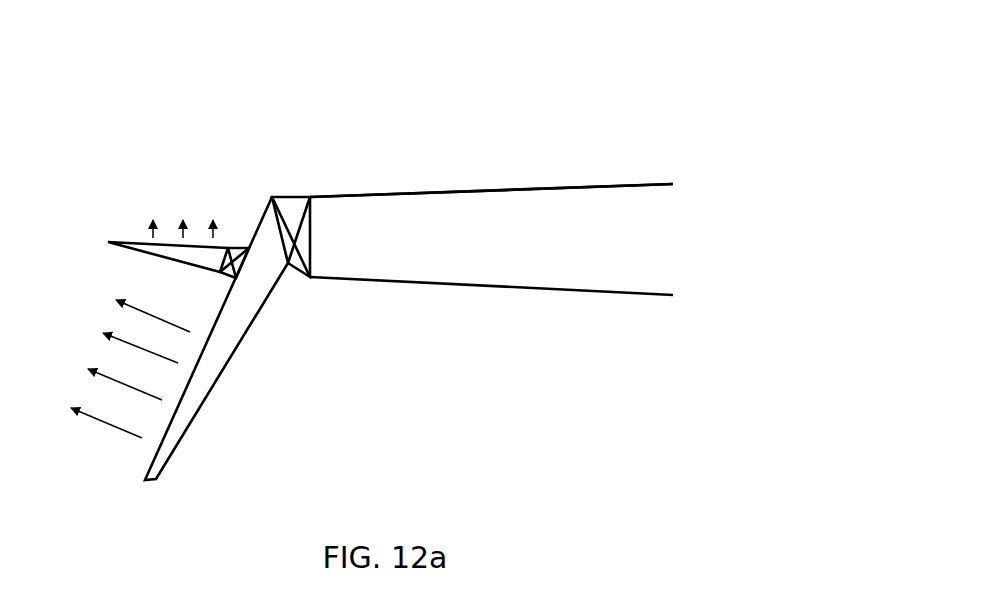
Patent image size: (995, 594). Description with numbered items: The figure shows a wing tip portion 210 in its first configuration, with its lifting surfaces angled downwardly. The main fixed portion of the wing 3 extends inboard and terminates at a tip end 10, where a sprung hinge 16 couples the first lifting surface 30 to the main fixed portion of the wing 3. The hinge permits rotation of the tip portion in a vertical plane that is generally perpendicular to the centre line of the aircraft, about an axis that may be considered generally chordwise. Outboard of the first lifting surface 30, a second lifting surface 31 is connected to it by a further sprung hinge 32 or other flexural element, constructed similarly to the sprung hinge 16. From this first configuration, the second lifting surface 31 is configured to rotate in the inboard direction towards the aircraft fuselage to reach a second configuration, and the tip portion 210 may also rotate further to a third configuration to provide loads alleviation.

The wing 3 is at (510, 213).
The tip end 10 is at (350, 212).
The sprung hinge 16 is at (292, 183).
The first lifting surface 30 is at (257, 288).
The second lifting surface 31 is at (187, 252).
The sprung hinge 32 is at (244, 242).
The tip portion 210 is at (269, 409).